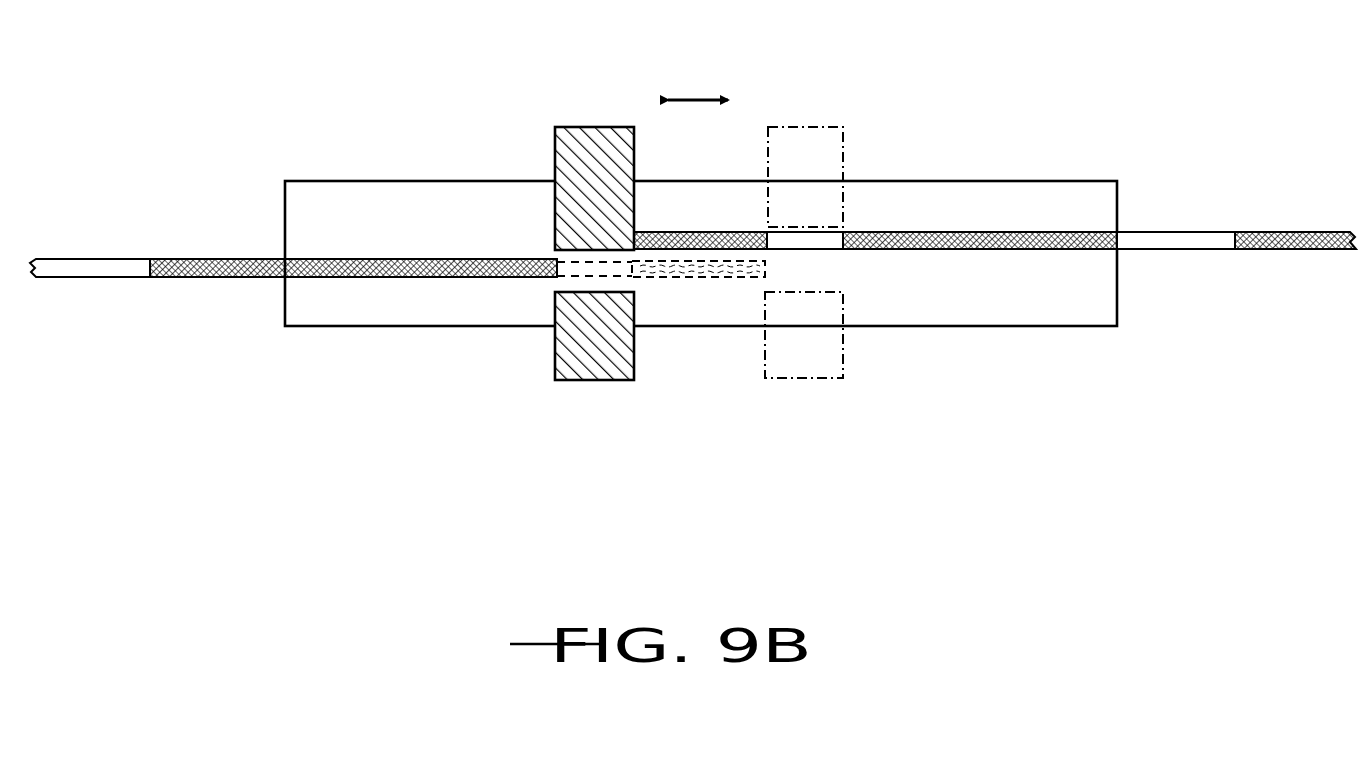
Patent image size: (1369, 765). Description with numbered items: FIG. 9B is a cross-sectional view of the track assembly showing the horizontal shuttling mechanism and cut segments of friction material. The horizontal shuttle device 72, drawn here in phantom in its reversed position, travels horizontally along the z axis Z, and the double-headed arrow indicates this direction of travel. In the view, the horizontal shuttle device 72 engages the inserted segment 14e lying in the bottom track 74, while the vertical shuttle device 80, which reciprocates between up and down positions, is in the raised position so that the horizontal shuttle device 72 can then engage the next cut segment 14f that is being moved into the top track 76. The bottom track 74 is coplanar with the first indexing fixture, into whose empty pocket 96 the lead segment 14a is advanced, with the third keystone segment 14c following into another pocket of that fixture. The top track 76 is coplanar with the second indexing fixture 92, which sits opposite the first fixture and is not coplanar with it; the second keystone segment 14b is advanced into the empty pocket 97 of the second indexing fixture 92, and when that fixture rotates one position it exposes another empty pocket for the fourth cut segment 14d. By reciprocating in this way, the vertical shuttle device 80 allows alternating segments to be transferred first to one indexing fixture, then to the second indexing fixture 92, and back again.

The vertical shuttle device 80 is at (490, 178).
The empty pocket 96 is at (113, 258).
The lead segment 14a is at (215, 277).
The third keystone segment 14c is at (330, 278).
The inserted segment 14e is at (485, 278).
The bottom track 74 is at (572, 127).
The next cut segment 14f is at (682, 250).
The top track 76 is at (880, 232).
The fourth cut segment 14d is at (930, 232).
The second keystone segment 14b is at (1040, 232).
The empty pocket 97 is at (1160, 233).
The second indexing fixture 92 is at (1305, 228).
The horizontal shuttle device 72 is at (803, 126).
The z axis Z is at (697, 97).